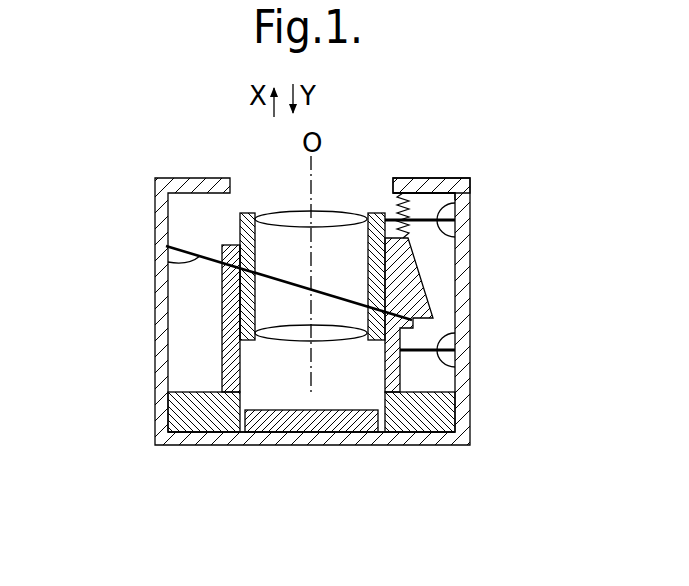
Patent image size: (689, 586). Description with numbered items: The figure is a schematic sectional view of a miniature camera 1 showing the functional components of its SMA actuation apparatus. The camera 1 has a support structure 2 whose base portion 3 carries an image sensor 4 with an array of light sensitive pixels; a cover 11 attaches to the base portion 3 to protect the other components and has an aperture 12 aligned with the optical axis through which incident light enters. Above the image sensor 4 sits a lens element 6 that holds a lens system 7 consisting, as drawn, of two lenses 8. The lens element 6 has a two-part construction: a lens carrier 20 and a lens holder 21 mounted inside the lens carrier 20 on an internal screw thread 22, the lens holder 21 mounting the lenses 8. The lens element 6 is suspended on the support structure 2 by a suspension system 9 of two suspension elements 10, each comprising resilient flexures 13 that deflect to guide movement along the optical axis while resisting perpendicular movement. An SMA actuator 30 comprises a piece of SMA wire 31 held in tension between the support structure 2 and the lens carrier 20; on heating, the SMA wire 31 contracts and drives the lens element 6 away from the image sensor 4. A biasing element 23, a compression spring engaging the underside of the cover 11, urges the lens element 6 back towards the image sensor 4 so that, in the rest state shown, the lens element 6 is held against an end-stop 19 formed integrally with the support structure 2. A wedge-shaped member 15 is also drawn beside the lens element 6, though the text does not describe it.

The camera 1 is at (303, 290).
The support structure 2 is at (314, 303).
The base portion 3 is at (343, 435).
The image sensor 4 is at (285, 433).
The lens element 6 is at (306, 226).
The lens system 7 is at (284, 213).
The lens 8 is at (329, 213).
The suspension system 9 is at (436, 191).
The suspension element 10 is at (440, 229).
The cover 11 is at (416, 184).
The aperture 12 is at (391, 193).
The resilient flexure 13 is at (450, 203).
The wedge member 15 is at (407, 288).
The end-stop 19 is at (185, 436).
The lens carrier 20 is at (161, 318).
The lens holder 21 is at (240, 308).
The internal screw thread 22 is at (237, 284).
The biasing element 23 is at (404, 197).
The SMA actuator 30 is at (168, 262).
The SMA wire 31 is at (197, 260).